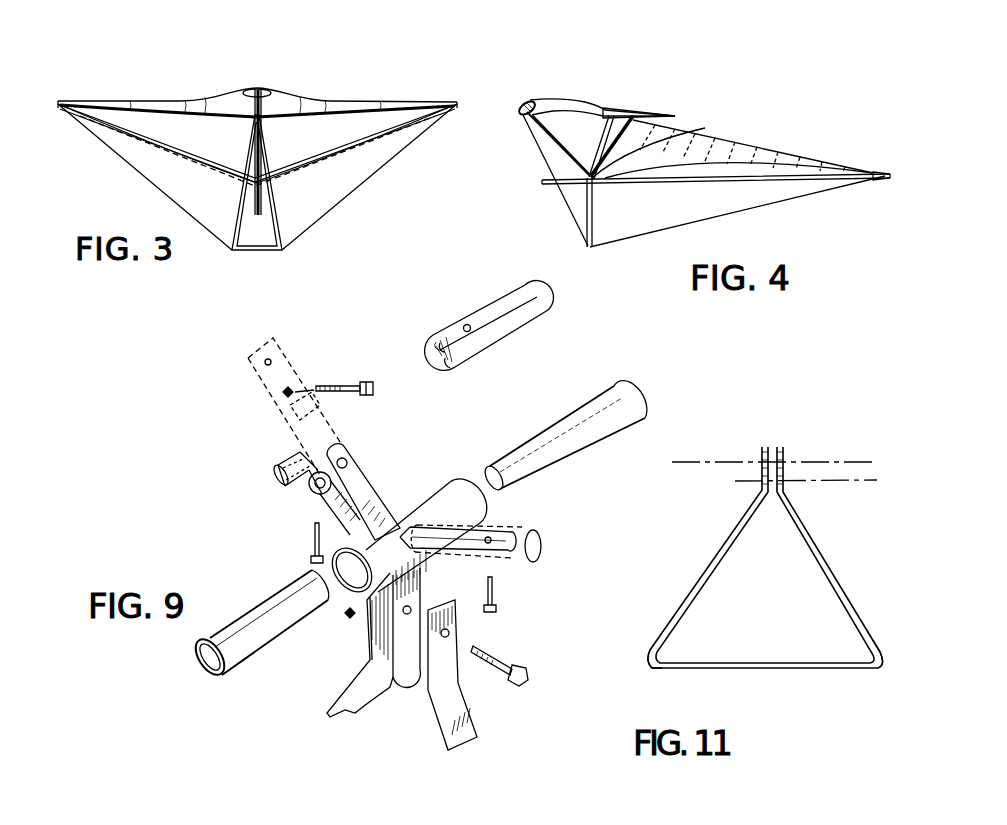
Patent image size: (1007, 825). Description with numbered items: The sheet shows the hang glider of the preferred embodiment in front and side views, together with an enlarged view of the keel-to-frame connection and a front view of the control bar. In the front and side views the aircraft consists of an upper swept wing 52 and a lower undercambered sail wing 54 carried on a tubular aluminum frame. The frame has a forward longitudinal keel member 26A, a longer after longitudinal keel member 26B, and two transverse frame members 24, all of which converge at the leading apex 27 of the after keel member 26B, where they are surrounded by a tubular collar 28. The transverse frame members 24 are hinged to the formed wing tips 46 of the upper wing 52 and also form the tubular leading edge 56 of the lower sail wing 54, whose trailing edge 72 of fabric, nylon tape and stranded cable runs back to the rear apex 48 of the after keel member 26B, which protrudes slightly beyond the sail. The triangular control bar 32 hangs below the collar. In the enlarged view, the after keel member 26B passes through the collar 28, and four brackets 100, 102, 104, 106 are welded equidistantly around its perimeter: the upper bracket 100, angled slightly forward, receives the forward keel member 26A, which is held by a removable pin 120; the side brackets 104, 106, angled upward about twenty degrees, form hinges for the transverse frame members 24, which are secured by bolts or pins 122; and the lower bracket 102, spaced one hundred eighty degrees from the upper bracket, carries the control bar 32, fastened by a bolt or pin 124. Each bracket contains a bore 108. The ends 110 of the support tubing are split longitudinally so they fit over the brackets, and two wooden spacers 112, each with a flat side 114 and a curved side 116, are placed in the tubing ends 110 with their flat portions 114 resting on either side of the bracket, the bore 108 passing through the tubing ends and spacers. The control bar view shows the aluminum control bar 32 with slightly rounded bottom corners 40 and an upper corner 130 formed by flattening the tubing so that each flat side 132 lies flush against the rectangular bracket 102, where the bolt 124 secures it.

In FIG. 3, the transverse frame member 24 is at (320, 163).
In FIG. 4, the transverse frame member 24 is at (607, 126).
In FIG. 9, the transverse frame member 24 is at (297, 453).
In FIG. 4, the forward longitudinal keel member 26A is at (566, 154).
In FIG. 9, the forward longitudinal keel member 26A is at (260, 385).
In FIG. 4, the after longitudinal keel member 26B is at (745, 183).
In FIG. 9, the after longitudinal keel member 26B is at (618, 386).
In FIG. 4, the leading apex of after keel member 27 is at (610, 187).
In FIG. 9, the tubular collar 28 is at (401, 511).
In FIG. 3, the control bar 32 is at (253, 255).
In FIG. 9, the control bar 32 is at (443, 740).
In FIG. 11, the control bar 32 is at (713, 553).
In FIG. 11, the bottom corners 40 is at (645, 651).
In FIG. 3, the formed wing tips 46 is at (459, 103).
In FIG. 4, the formed wing tips 46 is at (649, 104).
In FIG. 4, the rear apex of after keel member 48 is at (879, 180).
In FIG. 3, the upper swept wing 52 is at (312, 98).
In FIG. 4, the upper swept wing 52 is at (543, 100).
In FIG. 4, the lower undercambered sail wing 54 is at (730, 157).
In FIG. 3, the tubular leading edge 56 is at (357, 140).
In FIG. 4, the tubular leading edge 56 is at (672, 166).
In FIG. 4, the trailing edge 72 is at (815, 158).
In FIG. 9, the upper bracket 100 is at (353, 473).
In FIG. 9, the lower bracket 102 is at (407, 690).
In FIG. 11, the lower bracket 102 is at (772, 442).
In FIG. 9, the side bracket 104 is at (498, 523).
In FIG. 9, the side bracket 106 is at (283, 462).
In FIG. 9, the bore 108 is at (462, 323).
In FIG. 9, the ends of support structure tubing 110 is at (502, 338).
In FIG. 9, the wooden spacers 112 is at (432, 364).
In FIG. 9, the flat side of spacer 114 is at (448, 327).
In FIG. 9, the curved side of spacer 116 is at (445, 367).
In FIG. 9, the removable pin 120 is at (337, 380).
In FIG. 9, the bolts or pins 122 is at (310, 556).
In FIG. 9, the bolt or pin 124 is at (502, 678).
In FIG. 11, the upper corner of control bar 130 is at (771, 500).
In FIG. 11, the flat side 132 is at (757, 488).